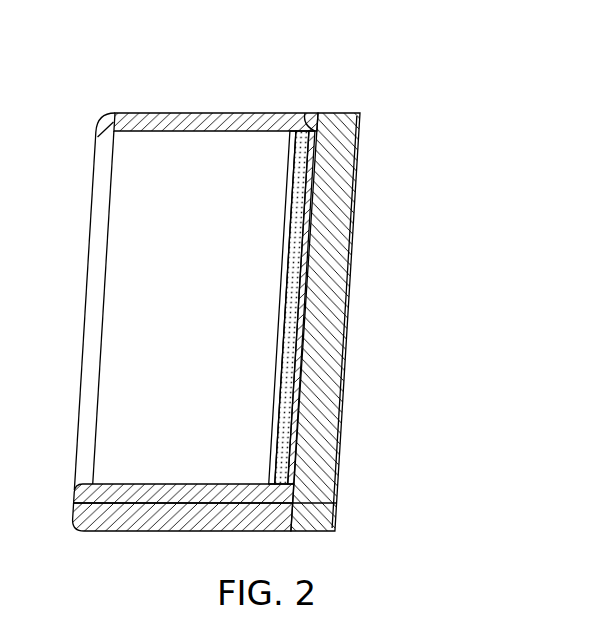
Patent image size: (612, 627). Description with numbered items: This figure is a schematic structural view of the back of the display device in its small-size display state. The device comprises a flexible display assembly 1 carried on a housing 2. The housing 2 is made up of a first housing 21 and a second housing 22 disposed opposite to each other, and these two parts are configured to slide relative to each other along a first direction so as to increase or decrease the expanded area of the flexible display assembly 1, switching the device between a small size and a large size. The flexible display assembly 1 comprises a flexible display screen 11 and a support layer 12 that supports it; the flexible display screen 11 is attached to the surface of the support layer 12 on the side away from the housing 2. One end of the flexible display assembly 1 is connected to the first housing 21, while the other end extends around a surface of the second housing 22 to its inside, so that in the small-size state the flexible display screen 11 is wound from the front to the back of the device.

The flexible display assembly 1 is at (437, 258).
The flexible display screen 11 is at (263, 253).
The support layer 12 is at (282, 317).
The housing 2 is at (367, 45).
The first housing 21 is at (341, 112).
The second housing 22 is at (266, 112).